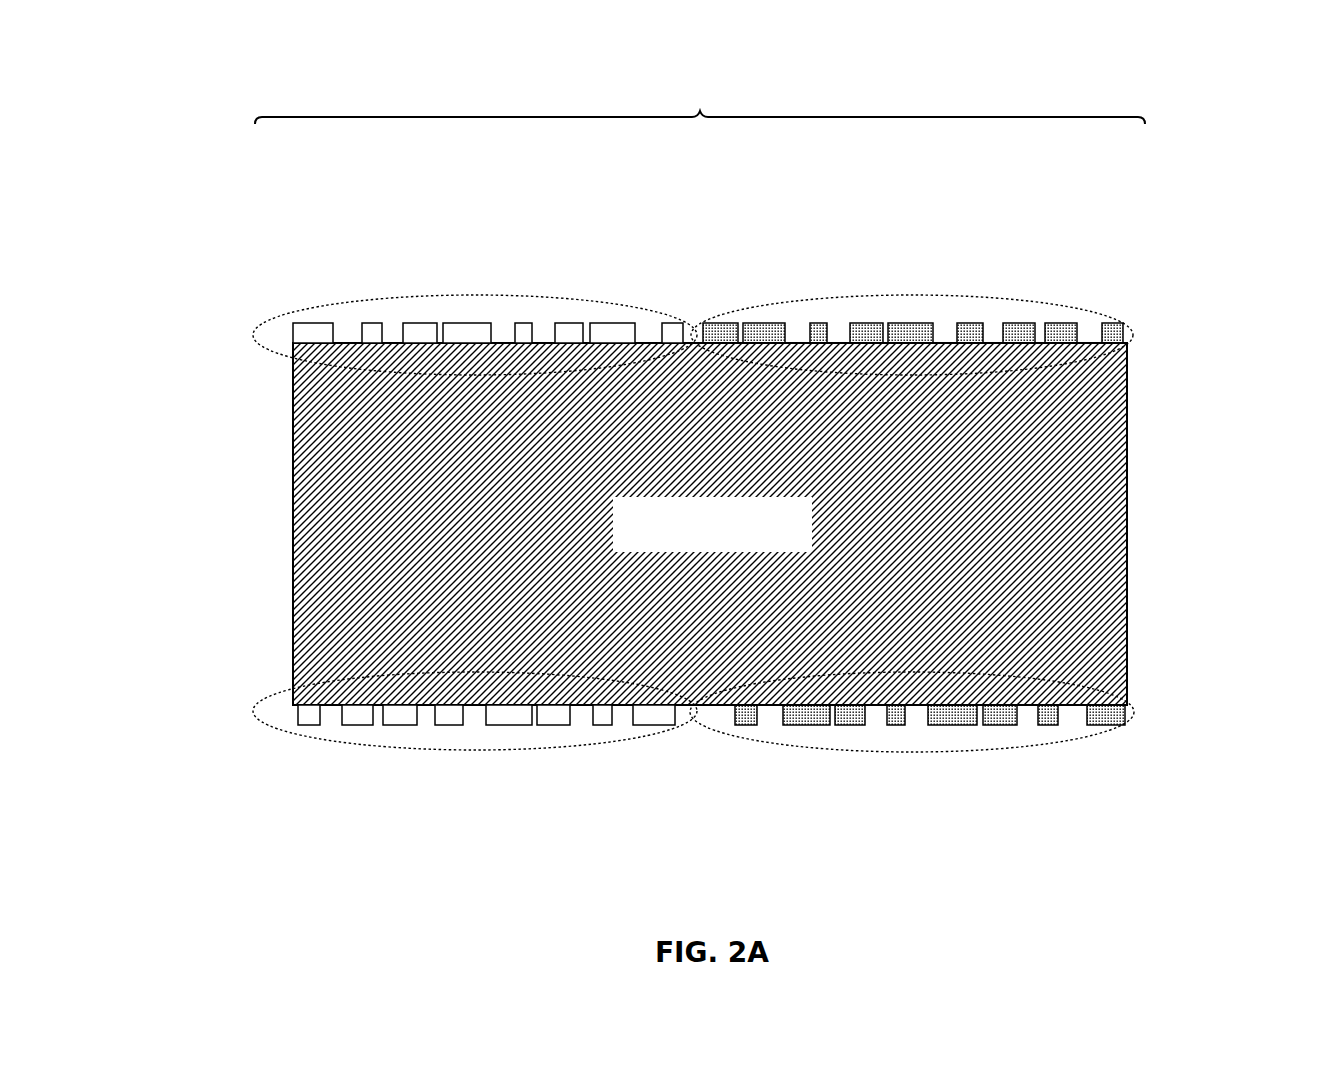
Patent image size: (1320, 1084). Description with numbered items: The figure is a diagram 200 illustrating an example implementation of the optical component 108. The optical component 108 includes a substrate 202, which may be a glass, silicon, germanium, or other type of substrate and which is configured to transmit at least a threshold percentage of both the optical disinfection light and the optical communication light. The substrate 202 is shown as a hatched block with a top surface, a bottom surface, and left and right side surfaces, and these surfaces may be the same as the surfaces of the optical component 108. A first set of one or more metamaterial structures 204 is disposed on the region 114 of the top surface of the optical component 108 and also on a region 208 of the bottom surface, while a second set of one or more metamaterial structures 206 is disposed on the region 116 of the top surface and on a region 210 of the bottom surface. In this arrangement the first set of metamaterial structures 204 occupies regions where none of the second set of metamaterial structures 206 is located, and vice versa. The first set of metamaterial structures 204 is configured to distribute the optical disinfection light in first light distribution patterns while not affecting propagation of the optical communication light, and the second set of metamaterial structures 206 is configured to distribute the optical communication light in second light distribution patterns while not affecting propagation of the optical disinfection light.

The diagram 200 is at (222, 66).
The optical component 108 is at (700, 111).
The substrate 202 is at (710, 524).
The first set of one or more metamaterial structures 204 is at (567, 802).
The second set of one or more metamaterial structures 206 is at (1014, 807).
The region 114 is at (283, 331).
The region 116 is at (1130, 340).
The region 208 is at (284, 708).
The region 210 is at (1130, 716).